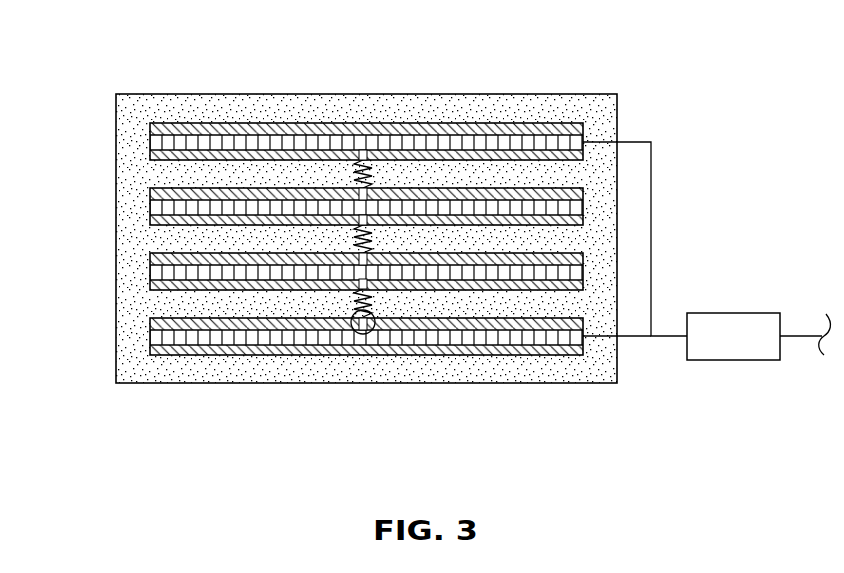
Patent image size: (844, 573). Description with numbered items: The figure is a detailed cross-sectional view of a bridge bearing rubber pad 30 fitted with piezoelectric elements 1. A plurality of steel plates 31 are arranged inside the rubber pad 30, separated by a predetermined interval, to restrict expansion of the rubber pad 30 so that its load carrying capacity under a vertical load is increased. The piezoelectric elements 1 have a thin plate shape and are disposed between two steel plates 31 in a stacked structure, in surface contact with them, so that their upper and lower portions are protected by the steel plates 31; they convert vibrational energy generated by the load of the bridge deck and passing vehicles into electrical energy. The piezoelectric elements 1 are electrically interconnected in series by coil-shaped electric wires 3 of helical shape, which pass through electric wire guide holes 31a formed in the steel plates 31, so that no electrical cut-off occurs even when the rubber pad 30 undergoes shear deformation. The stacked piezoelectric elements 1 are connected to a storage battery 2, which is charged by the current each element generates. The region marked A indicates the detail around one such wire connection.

The rubber pad 30 is at (493, 110).
The steel plates 31 is at (298, 286).
The electric wire guide holes 31a is at (357, 160).
The coil-shaped electric wires 3 is at (368, 186).
The piezoelectric elements 1 is at (208, 333).
The storage battery 2 is at (734, 328).
The detail region A is at (366, 345).